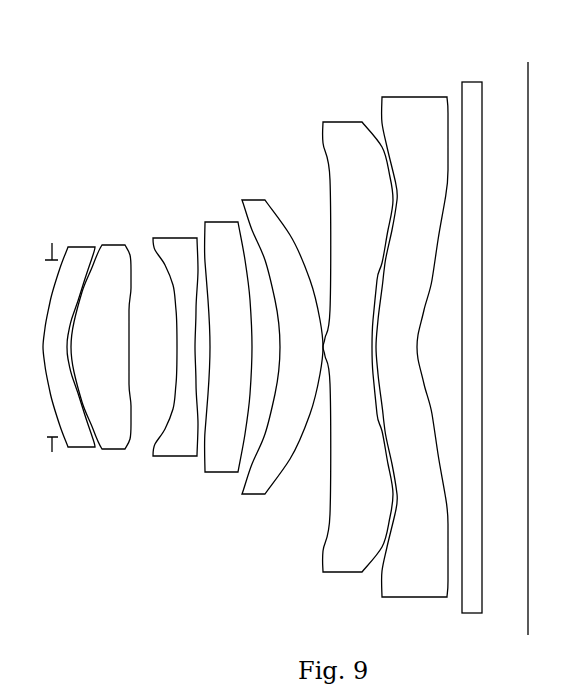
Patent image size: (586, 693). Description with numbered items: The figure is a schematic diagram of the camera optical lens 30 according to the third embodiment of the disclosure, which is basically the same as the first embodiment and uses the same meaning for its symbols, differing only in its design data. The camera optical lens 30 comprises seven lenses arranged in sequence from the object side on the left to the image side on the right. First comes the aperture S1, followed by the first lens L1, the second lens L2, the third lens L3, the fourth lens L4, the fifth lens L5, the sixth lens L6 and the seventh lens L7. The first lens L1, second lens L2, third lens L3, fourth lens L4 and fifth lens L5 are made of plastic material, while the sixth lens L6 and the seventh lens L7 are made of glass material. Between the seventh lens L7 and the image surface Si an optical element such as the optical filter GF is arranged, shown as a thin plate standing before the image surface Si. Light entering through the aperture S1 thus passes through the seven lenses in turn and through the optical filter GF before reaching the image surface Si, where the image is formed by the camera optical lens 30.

The camera optical lens 30 is at (330, 43).
The aperture S1 is at (49, 336).
The first lens L1 is at (69, 333).
The second lens L2 is at (101, 333).
The third lens L3 is at (175, 332).
The fourth lens L4 is at (228, 336).
The fifth lens L5 is at (282, 335).
The sixth lens L6 is at (358, 336).
The seventh lens L7 is at (412, 338).
The optical filter GF is at (470, 333).
The image surface Si is at (529, 331).